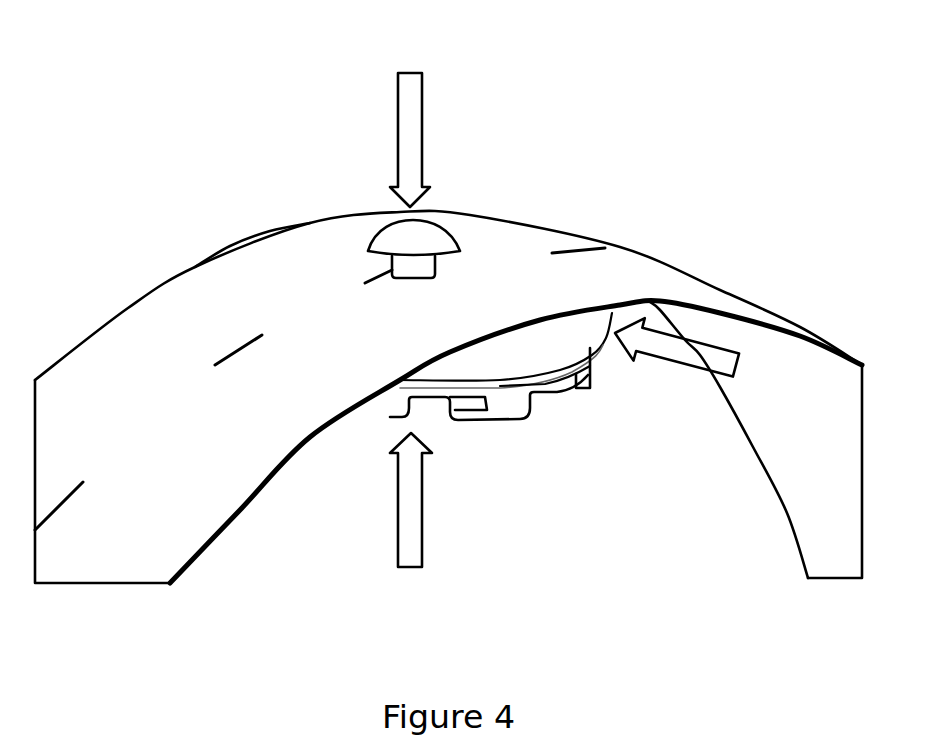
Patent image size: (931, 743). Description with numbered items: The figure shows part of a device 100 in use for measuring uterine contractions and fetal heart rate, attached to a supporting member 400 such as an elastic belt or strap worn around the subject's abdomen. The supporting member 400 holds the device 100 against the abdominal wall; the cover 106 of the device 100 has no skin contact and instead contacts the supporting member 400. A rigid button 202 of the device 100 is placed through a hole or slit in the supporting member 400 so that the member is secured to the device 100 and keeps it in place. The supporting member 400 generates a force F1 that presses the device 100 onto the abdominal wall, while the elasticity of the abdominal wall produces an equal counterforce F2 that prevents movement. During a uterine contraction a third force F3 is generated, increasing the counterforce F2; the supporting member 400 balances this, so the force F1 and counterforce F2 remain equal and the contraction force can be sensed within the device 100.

The device 100 is at (590, 433).
The cover 106 is at (501, 355).
The rigid button 202 is at (425, 232).
The supporting member 400 is at (140, 358).
The force F1 is at (410, 124).
The counterforce F2 is at (411, 519).
The third force F3 is at (697, 350).